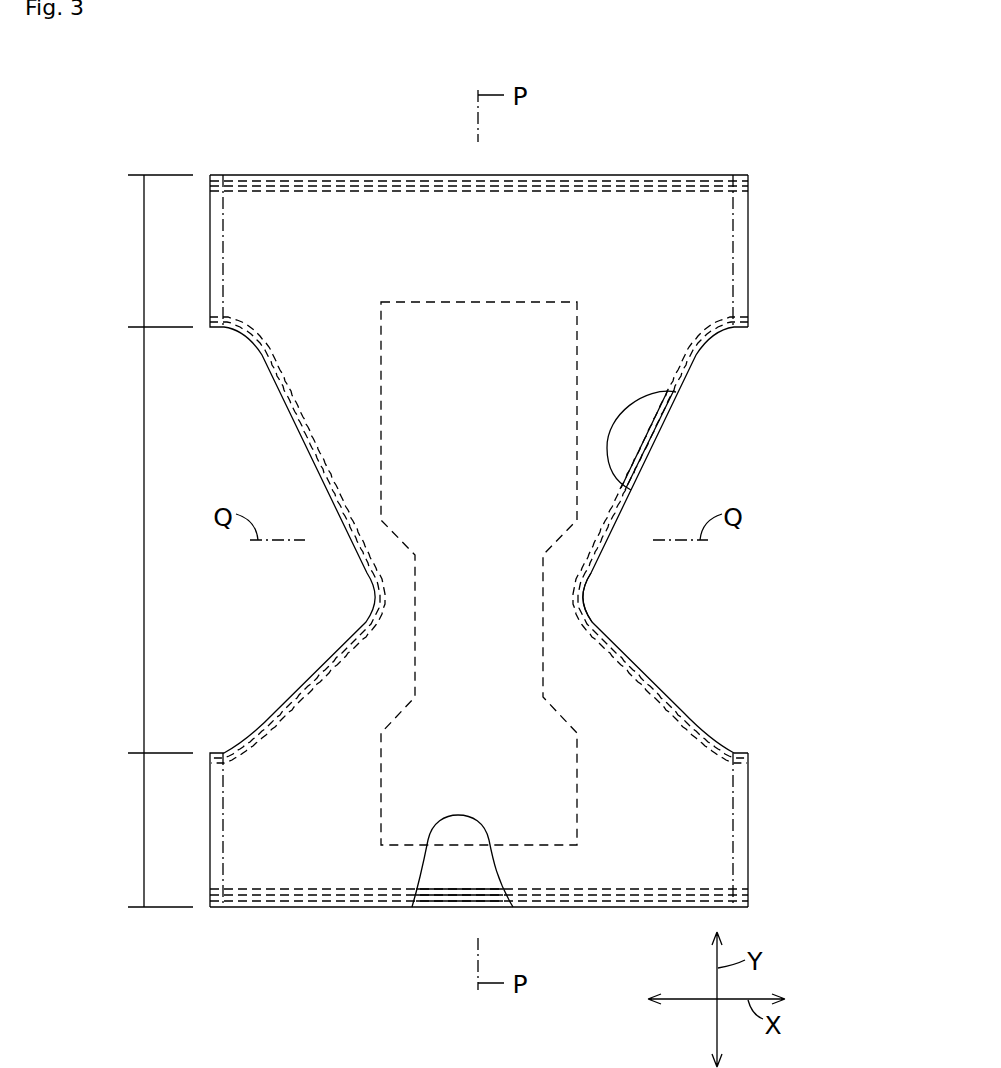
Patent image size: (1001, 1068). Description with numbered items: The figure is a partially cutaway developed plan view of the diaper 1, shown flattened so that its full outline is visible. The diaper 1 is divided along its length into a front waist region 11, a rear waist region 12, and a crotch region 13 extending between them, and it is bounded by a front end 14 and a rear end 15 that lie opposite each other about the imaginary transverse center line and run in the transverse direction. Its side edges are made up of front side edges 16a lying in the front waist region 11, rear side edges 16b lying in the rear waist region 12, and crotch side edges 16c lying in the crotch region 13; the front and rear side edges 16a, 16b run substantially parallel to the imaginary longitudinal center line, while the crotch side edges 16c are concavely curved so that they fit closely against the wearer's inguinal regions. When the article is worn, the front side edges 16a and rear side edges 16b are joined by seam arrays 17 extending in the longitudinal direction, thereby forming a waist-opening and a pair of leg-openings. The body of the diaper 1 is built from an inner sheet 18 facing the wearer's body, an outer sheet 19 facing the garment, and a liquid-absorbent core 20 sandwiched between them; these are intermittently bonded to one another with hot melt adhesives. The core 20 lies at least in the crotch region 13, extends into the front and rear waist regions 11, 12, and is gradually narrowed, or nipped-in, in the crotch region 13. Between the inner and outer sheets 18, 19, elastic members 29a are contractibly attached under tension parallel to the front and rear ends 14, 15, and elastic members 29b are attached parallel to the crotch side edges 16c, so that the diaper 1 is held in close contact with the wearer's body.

The diaper 1 is at (709, 119).
The front waist region 11 is at (144, 828).
The rear waist region 12 is at (144, 248).
The crotch region 13 is at (144, 518).
The front end 14 is at (585, 908).
The rear end 15 is at (551, 174).
The front side edges 16a is at (748, 785).
The rear side edges 16b is at (748, 287).
The crotch side edges 16c is at (592, 606).
The seam arrays 17 is at (215, 239).
The inner sheet 18 is at (386, 877).
The outer sheet 19 is at (436, 877).
The liquid-absorbent core 20 is at (461, 832).
The elastic members 29a is at (613, 179).
The elastic members 29b is at (657, 425).